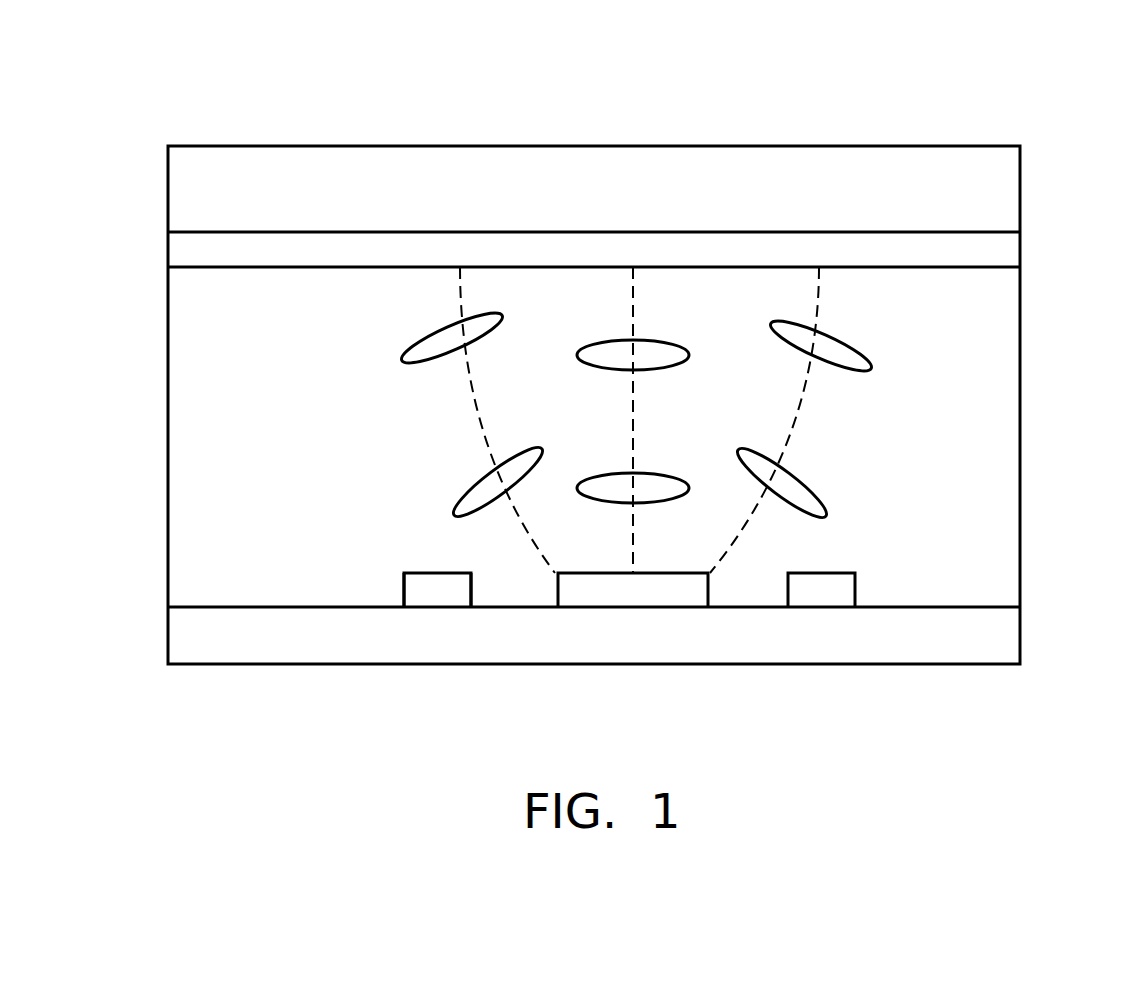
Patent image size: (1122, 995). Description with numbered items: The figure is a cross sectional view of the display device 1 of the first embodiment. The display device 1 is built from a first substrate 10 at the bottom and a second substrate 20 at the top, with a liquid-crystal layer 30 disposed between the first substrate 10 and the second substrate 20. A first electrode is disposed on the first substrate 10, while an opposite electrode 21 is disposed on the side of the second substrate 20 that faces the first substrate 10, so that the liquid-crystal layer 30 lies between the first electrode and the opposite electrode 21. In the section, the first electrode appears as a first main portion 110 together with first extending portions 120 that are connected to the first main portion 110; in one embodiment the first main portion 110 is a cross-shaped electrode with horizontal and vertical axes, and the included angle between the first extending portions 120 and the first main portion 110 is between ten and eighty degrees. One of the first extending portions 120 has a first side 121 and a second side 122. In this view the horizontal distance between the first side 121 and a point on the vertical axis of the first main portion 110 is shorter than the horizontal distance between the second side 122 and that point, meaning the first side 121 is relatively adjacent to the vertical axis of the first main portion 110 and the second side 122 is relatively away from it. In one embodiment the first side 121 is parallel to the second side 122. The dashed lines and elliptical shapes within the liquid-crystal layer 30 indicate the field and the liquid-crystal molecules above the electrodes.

The display device 1 is at (131, 104).
The first substrate 10 is at (998, 636).
The second substrate 20 is at (998, 191).
The opposite electrode 21 is at (998, 251).
The liquid-crystal layer 30 is at (998, 438).
The first main portion 110 is at (633, 590).
The first extending portion 120 is at (438, 590).
The first side 121 is at (471, 590).
The second side 122 is at (402, 574).